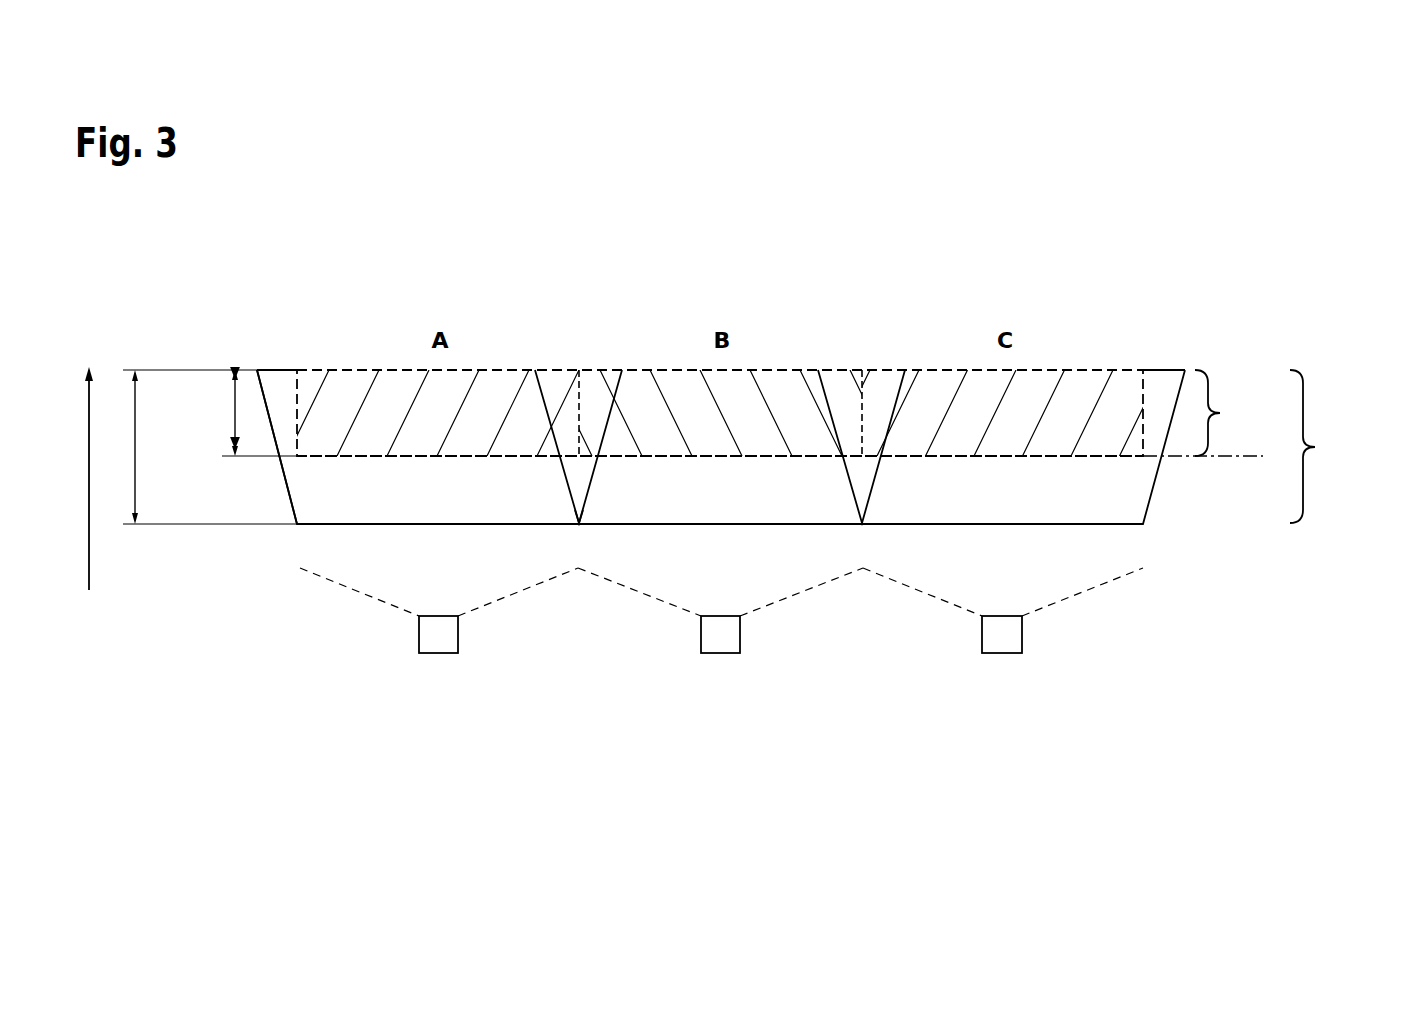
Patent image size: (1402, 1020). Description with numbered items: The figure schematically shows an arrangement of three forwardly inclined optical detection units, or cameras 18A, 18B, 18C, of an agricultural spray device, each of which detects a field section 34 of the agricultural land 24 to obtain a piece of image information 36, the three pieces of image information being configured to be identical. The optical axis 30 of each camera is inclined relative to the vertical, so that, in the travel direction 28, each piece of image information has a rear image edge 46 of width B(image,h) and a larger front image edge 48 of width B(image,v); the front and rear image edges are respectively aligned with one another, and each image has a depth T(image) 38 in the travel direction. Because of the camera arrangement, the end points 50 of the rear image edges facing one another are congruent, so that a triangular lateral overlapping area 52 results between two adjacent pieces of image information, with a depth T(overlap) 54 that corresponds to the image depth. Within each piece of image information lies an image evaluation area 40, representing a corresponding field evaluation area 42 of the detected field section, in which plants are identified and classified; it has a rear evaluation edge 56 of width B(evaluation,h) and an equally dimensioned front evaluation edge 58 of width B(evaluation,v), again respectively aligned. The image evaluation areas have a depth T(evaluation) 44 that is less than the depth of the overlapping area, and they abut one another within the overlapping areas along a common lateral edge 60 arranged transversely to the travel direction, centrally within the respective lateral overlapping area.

The optical detection unit 18A is at (436, 653).
The optical detection unit 18B is at (717, 653).
The optical detection unit 18C is at (1000, 653).
The agricultural land 24 is at (1108, 508).
The travel direction 28 is at (89, 568).
The optical axis 30 is at (1248, 456).
The field section 34 is at (1341, 446).
The piece of image information 36 is at (1341, 446).
The depth T(image) 38 is at (210, 447).
The image evaluation area 40 is at (1246, 413).
The field evaluation area 42 is at (1246, 413).
The depth T(evaluation) 44 is at (235, 413).
The rear image edge 46 is at (435, 524).
The front image edge 48 is at (277, 370).
The end point 50 is at (579, 523).
The lateral overlapping area 52 is at (563, 405).
The depth T(overlap) 54 is at (135, 487).
The rear evaluation edge 56 is at (472, 456).
The front evaluation edge 58 is at (357, 370).
The common lateral edge 60 is at (580, 388).